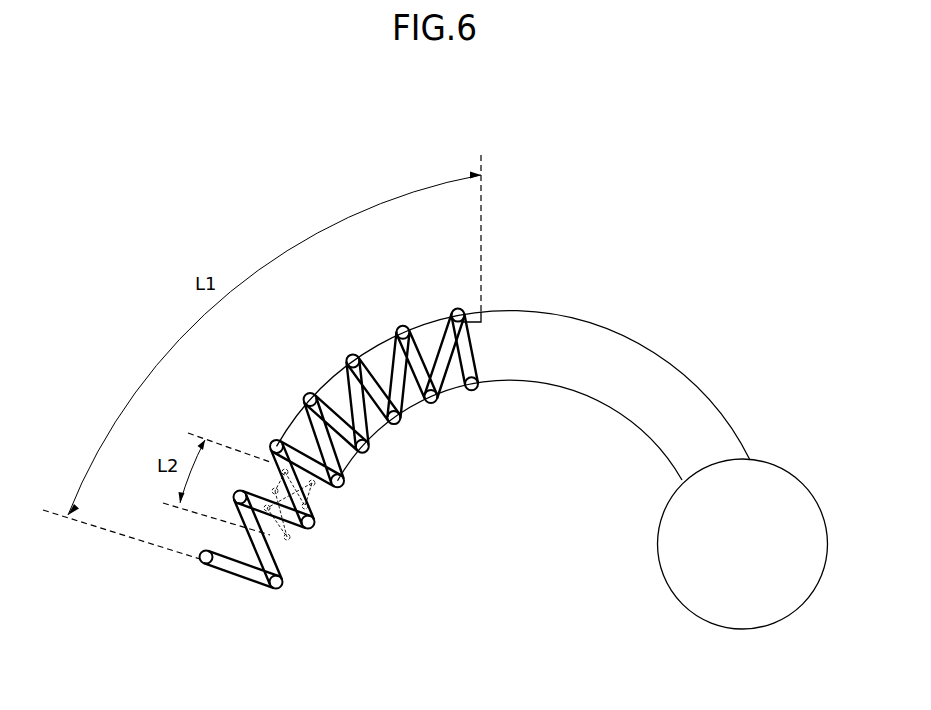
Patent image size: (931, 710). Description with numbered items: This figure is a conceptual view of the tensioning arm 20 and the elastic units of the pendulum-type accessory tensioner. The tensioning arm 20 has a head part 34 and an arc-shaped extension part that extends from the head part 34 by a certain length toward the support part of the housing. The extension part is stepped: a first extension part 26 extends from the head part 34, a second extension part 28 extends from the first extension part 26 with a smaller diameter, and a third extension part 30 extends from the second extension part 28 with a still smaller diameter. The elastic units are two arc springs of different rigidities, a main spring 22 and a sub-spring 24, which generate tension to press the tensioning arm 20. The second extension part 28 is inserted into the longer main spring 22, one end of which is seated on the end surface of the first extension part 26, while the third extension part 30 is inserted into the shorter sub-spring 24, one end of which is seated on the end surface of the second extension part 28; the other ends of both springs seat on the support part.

The tensioning arm 20 is at (140, 124).
The main spring 22 is at (431, 406).
The sub-spring 24 is at (288, 538).
The first extension part 26 is at (629, 377).
The second extension part 28 is at (453, 386).
The third extension part 30 is at (290, 523).
The head part 34 is at (778, 520).